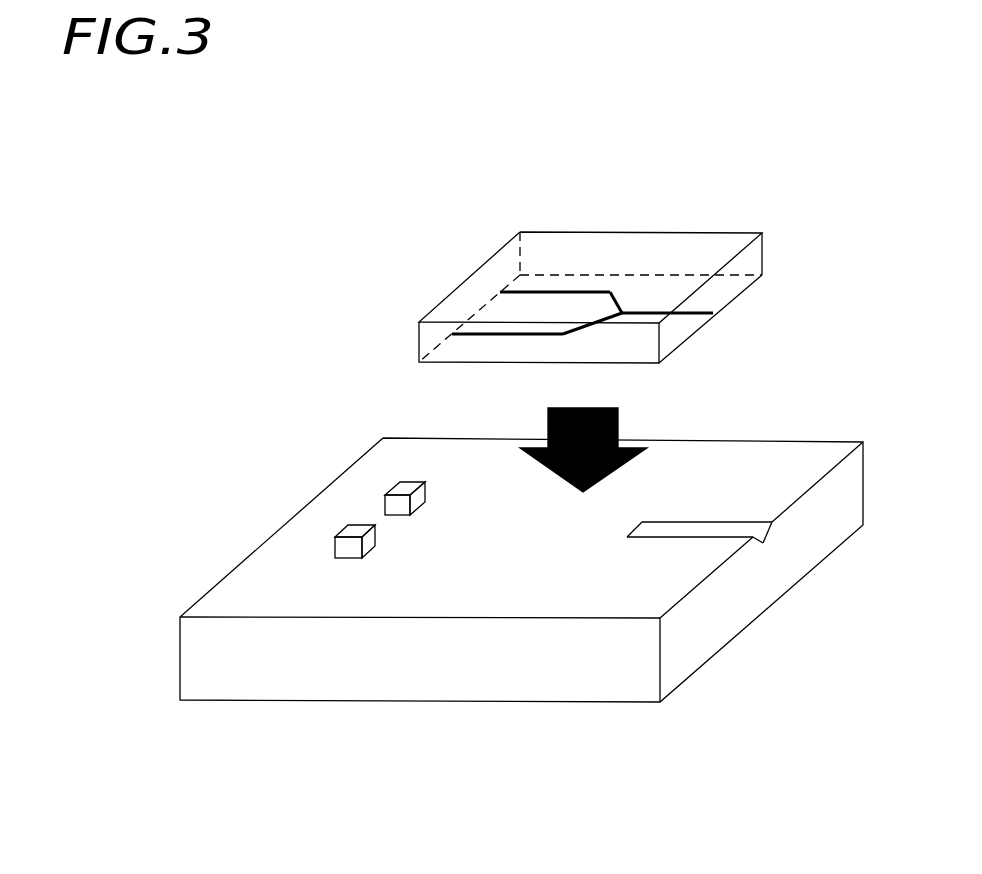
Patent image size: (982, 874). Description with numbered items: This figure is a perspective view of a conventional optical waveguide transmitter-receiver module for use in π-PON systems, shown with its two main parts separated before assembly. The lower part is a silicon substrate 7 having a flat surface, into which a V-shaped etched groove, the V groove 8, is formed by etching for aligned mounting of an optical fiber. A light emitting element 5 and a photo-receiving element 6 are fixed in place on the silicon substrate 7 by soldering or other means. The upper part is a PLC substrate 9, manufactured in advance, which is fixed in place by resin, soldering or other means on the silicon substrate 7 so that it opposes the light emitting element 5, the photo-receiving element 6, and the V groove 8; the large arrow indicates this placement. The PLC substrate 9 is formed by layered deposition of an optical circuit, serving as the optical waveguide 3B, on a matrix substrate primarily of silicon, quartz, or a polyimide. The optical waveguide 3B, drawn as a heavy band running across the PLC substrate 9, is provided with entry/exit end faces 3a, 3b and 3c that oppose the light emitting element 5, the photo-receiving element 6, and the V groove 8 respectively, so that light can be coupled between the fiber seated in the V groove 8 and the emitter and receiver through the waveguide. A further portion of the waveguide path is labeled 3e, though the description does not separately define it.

The PLC substrate 9 is at (562, 230).
The entry/exit end face 3a is at (452, 334).
The entry/exit end face 3b is at (500, 292).
The optical waveguide 3B is at (620, 308).
The inclined core portion 3e is at (622, 313).
The entry/exit end face 3c is at (713, 313).
The light emitting element 5 is at (350, 532).
The photo-receiving element 6 is at (400, 487).
The silicon substrate 7 is at (220, 685).
The V groove 8 is at (762, 530).